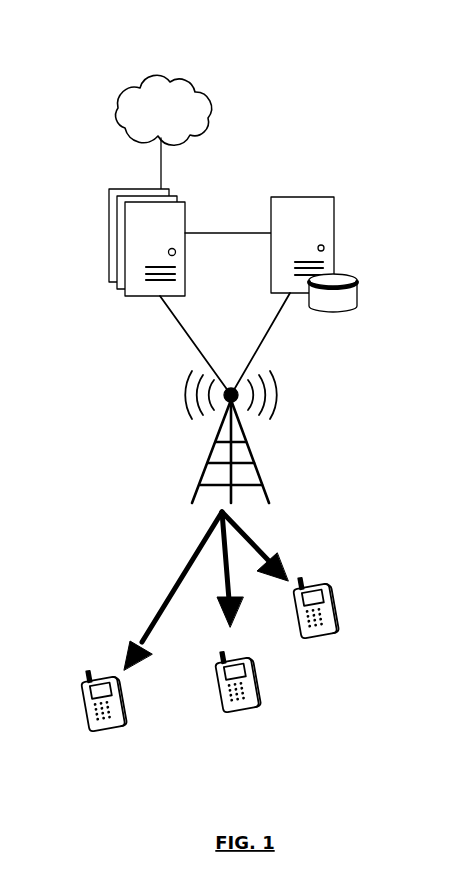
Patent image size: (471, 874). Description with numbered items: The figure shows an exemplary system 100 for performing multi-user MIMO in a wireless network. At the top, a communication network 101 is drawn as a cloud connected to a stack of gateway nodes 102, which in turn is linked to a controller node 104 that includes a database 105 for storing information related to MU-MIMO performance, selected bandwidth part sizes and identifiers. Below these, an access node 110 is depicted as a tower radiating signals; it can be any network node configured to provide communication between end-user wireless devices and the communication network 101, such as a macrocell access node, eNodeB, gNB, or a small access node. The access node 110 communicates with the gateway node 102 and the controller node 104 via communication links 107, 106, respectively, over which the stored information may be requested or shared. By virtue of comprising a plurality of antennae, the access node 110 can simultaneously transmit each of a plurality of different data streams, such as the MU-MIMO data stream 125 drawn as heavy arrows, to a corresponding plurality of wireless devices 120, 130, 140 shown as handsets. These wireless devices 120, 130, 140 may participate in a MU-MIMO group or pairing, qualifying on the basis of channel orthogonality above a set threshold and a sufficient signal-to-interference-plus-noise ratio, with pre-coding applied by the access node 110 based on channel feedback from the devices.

The system 100 is at (340, 60).
The communication network 101 is at (164, 132).
The gateway node 102 is at (128, 189).
The controller node 104 is at (331, 197).
The database 105 is at (356, 281).
The communication link 106 is at (268, 330).
The communication link 107 is at (177, 322).
The access node 110 is at (212, 468).
The wireless device 120 is at (90, 722).
The MU-MIMO data stream 125 is at (187, 554).
The wireless device 130 is at (224, 700).
The wireless device 140 is at (326, 591).